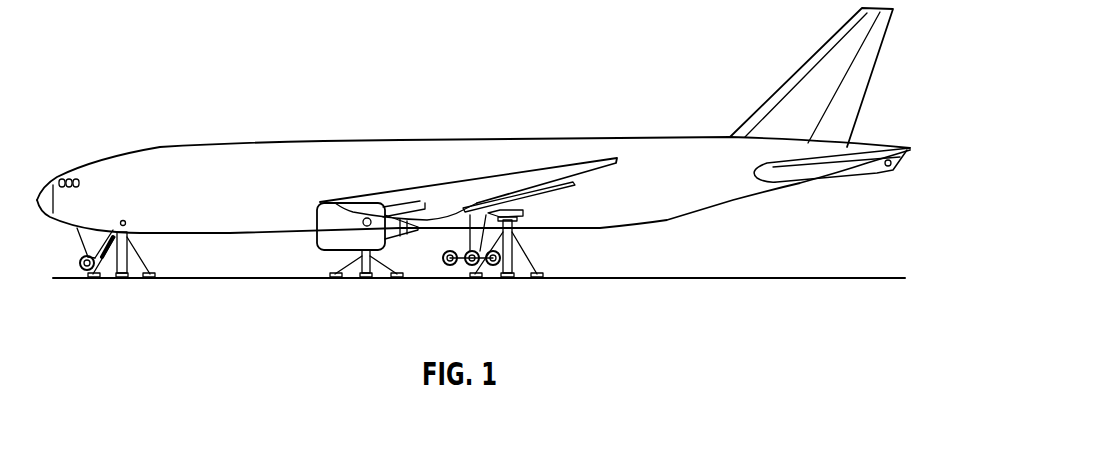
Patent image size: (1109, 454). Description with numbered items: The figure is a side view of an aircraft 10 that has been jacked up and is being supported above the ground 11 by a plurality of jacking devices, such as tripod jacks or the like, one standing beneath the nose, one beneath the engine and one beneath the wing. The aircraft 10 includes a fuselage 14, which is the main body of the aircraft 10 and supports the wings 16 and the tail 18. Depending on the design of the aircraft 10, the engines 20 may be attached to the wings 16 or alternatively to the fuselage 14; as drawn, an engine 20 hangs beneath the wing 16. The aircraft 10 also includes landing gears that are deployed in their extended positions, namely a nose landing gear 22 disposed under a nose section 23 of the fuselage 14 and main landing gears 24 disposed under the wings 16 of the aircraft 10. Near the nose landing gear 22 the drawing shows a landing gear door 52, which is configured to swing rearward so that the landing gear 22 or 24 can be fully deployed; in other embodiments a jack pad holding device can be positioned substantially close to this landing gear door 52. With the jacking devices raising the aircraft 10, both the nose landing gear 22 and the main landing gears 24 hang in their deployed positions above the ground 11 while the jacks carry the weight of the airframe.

The aircraft 10 is at (471, 173).
The ground 11 is at (675, 277).
The fuselage 14 is at (207, 218).
The wings 16 is at (468, 178).
The tail 18 is at (826, 130).
The engines 20 is at (330, 247).
The nose landing gear 22 is at (82, 238).
The nose section 23 is at (85, 212).
The main landing gears 24 is at (420, 217).
The landing gear door 52 is at (152, 247).